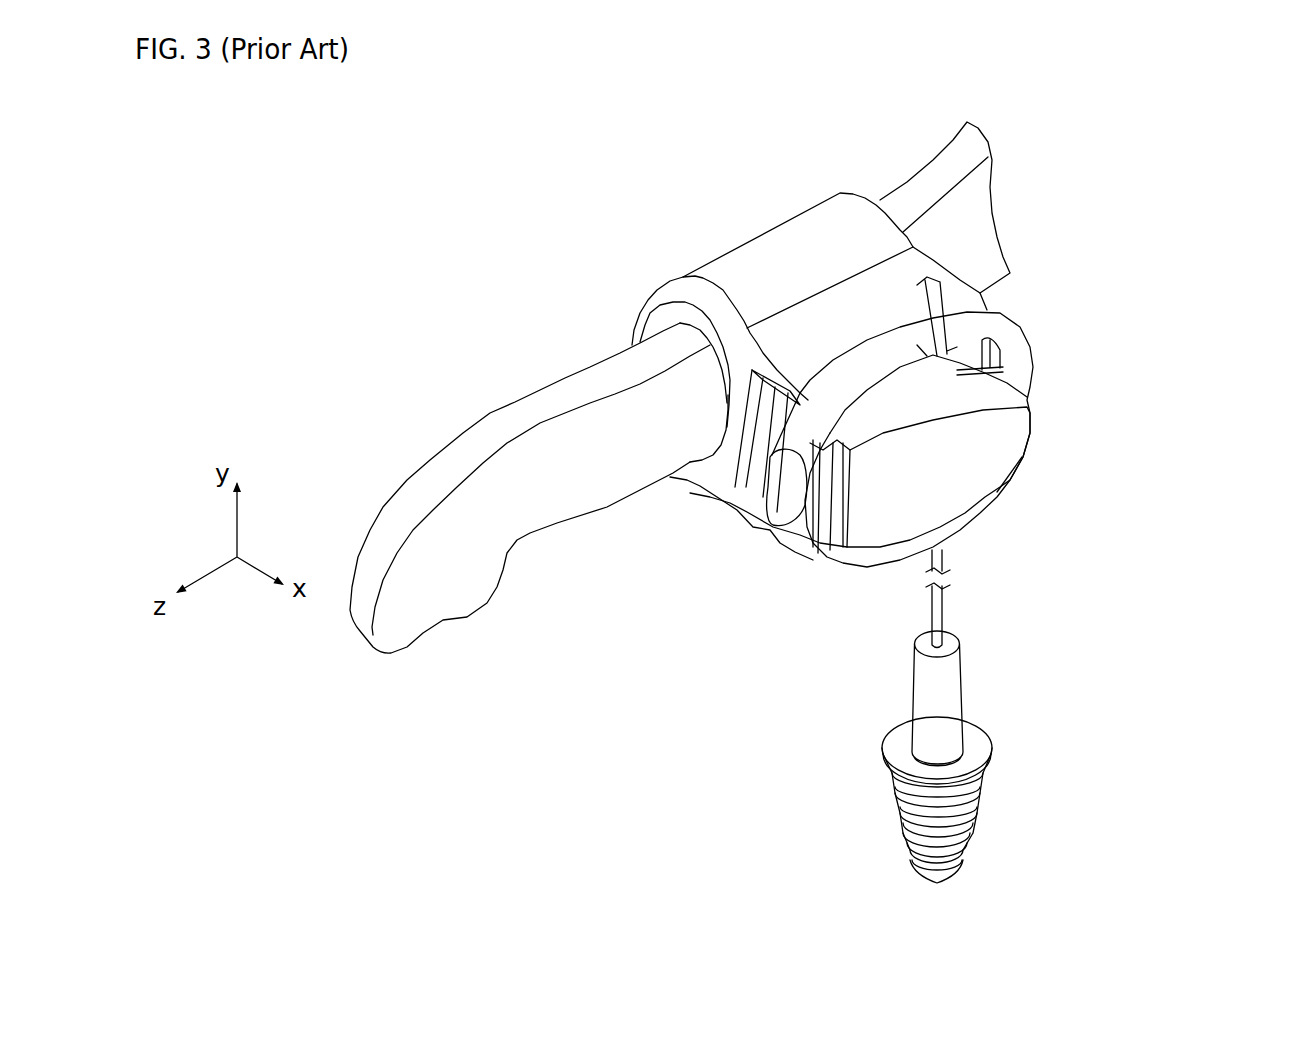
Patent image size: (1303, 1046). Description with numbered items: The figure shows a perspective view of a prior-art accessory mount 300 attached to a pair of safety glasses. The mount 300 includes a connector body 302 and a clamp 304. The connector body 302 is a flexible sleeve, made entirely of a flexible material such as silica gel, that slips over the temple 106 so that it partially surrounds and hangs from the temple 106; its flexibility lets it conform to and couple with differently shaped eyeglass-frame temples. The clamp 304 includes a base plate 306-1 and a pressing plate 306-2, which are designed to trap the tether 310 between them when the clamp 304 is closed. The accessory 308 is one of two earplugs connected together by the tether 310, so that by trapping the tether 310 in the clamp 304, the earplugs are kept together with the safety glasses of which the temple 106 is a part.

The mount 300 is at (875, 337).
The connector body 302 is at (820, 182).
The clamp 304 is at (1040, 394).
The base plate 306-1 is at (1046, 343).
The pressing plate 306-2 is at (1013, 500).
The accessory 308 is at (978, 753).
The tether 310 is at (920, 607).
The temple 106 is at (505, 427).